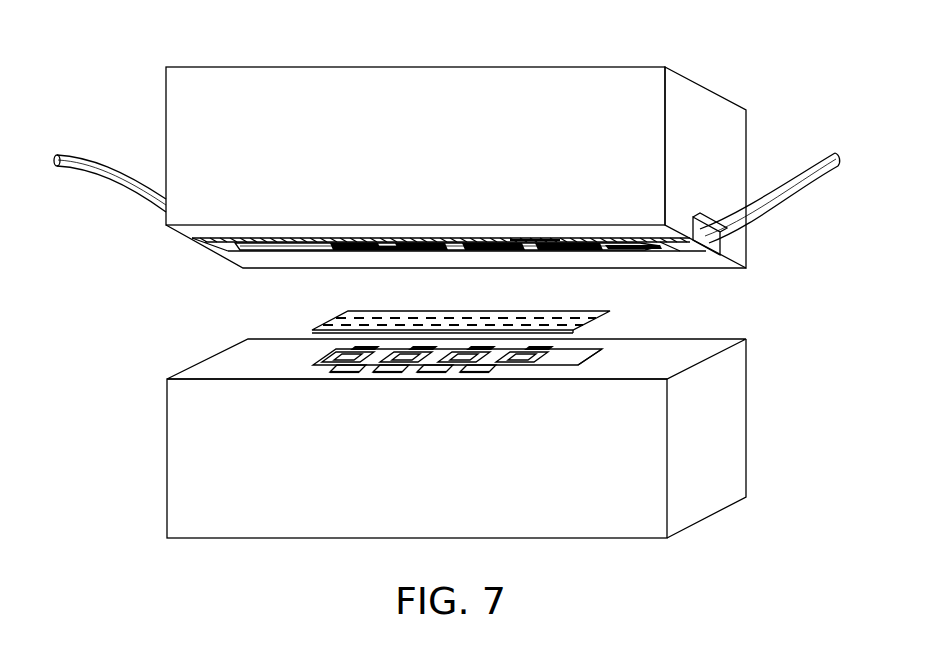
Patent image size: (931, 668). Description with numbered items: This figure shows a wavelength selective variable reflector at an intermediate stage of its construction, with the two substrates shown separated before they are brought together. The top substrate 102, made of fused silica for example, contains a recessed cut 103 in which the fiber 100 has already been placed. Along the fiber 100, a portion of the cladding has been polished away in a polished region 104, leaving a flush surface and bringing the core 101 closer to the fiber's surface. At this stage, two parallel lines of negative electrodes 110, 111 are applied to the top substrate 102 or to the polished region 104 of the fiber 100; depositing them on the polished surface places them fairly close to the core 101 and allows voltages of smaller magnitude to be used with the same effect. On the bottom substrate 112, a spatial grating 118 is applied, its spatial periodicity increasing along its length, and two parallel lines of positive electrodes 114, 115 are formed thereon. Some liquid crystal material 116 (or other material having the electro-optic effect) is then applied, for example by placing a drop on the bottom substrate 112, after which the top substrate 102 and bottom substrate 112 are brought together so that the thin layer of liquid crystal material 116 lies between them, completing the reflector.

The fiber 100 is at (90, 155).
The core 101 is at (280, 243).
The top substrate 102 is at (432, 66).
The recessed cut 103 is at (722, 253).
The polished region 104 is at (530, 242).
The negative electrode 110 is at (350, 241).
The negative electrode 111 is at (373, 250).
The bottom substrate 112 is at (728, 468).
The positive electrode 114 is at (350, 373).
The positive electrode 115 is at (360, 348).
The liquid crystal material 116 is at (567, 314).
The spatial grating 118 is at (580, 361).